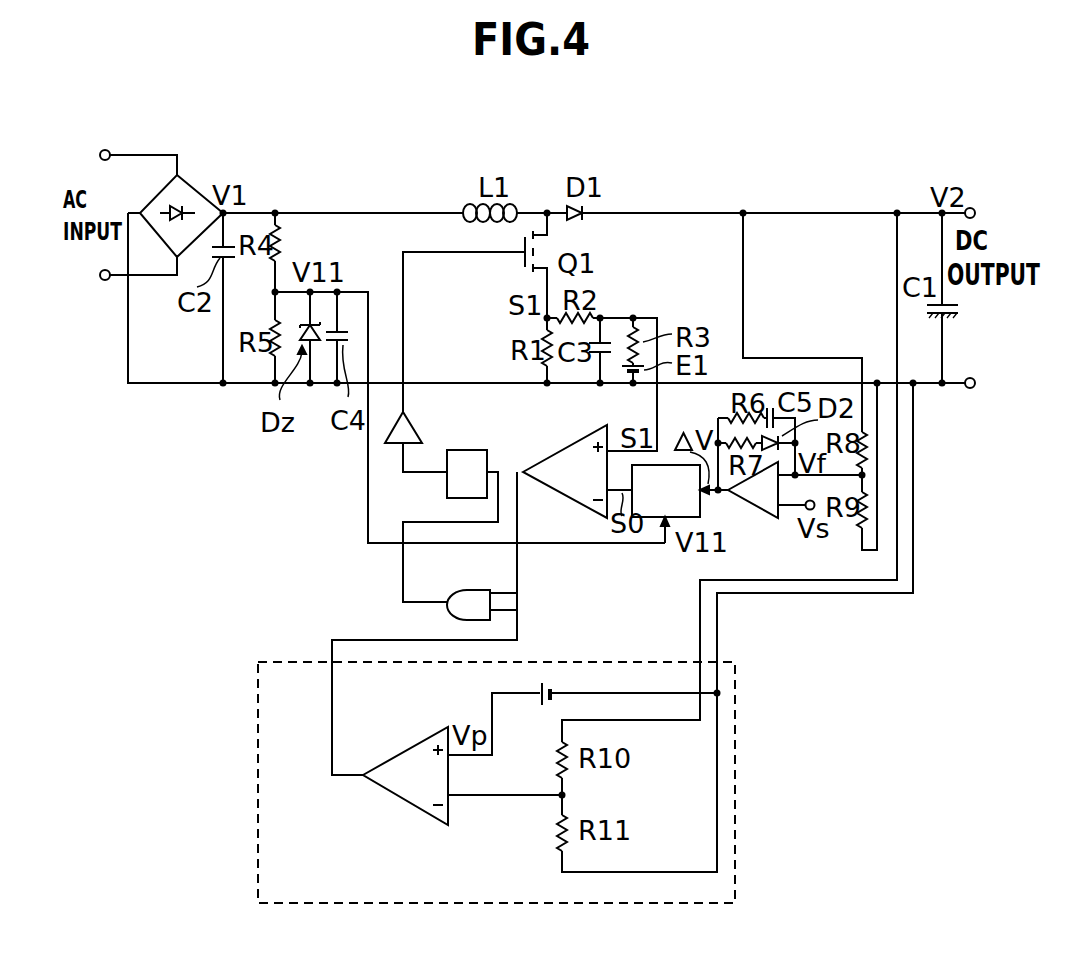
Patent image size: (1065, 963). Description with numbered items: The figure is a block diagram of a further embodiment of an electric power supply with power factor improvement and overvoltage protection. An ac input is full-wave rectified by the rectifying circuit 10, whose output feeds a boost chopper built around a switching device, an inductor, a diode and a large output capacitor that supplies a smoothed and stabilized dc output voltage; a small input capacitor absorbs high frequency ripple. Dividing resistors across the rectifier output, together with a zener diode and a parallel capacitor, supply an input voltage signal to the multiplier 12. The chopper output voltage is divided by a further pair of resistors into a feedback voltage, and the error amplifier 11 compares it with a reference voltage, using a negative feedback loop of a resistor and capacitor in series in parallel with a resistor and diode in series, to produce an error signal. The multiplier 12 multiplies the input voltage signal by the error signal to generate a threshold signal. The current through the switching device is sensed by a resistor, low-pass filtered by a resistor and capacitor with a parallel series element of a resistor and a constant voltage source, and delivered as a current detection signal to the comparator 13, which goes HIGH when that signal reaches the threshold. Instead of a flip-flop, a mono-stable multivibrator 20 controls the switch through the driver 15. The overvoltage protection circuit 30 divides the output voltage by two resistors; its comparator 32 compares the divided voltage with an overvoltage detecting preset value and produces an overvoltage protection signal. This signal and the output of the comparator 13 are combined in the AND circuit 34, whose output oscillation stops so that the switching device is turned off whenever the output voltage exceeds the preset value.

The rectifying circuit 10 is at (190, 186).
The error amplifier 11 is at (746, 500).
The multiplier 12 is at (663, 465).
The comparator 13 is at (563, 449).
The driver 15 is at (410, 424).
The mono-stable multivibrator 20 is at (472, 450).
The overvoltage protection circuit 30 is at (625, 662).
The comparator 32 is at (410, 748).
The AND circuit 34 is at (458, 590).